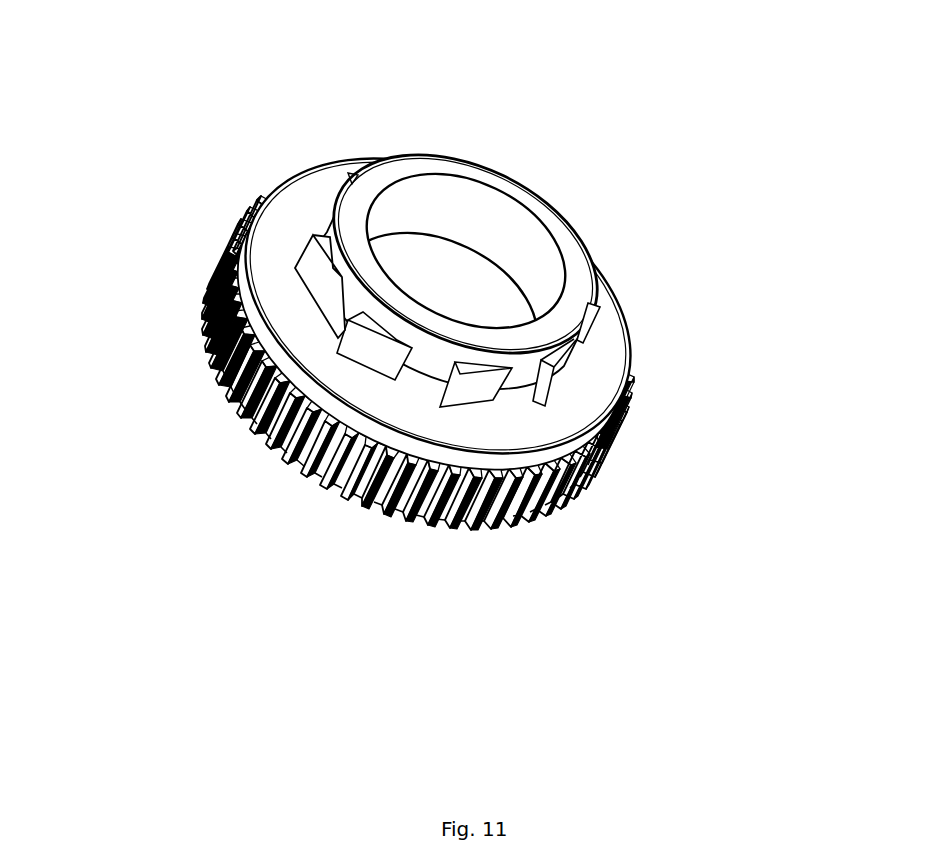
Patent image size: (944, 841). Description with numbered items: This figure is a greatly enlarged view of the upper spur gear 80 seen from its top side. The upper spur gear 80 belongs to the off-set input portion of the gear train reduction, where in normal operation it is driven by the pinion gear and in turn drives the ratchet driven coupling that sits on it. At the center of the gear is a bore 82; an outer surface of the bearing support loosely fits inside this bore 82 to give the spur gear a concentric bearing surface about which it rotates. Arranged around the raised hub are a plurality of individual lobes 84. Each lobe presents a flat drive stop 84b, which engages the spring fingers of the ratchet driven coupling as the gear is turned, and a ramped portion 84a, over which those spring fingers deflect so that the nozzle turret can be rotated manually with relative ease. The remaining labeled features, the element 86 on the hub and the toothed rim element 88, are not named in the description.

The upper spur gear 80 is at (431, 279).
The bore 82 is at (448, 200).
The lobes 84 is at (333, 253).
The ramped portion 84a is at (312, 268).
The flat drive stops 84b is at (552, 390).
The hub sleeve 86 is at (355, 287).
The gear teeth 88 is at (253, 425).